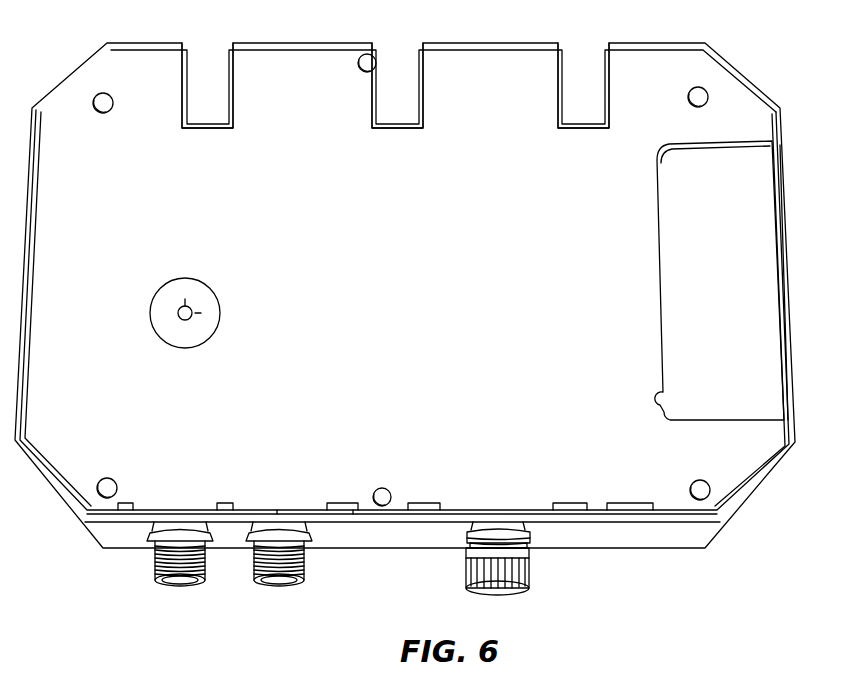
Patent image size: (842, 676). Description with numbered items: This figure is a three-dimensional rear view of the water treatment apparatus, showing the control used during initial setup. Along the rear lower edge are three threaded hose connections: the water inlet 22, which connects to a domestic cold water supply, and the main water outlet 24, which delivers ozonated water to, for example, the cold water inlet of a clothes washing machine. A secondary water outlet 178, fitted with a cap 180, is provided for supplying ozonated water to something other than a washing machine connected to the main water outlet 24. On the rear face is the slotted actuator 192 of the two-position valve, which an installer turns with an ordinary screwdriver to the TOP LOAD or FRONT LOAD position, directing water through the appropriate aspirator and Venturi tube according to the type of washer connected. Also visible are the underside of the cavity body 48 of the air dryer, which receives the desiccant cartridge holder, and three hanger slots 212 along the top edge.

The hanger slots 212 is at (207, 103).
The cavity body 48 is at (724, 292).
The slotted actuator 192 is at (185, 322).
The water inlet 22 is at (180, 566).
The water outlet 24 is at (280, 566).
The secondary water outlet 178 is at (530, 540).
The cap 180 is at (505, 576).